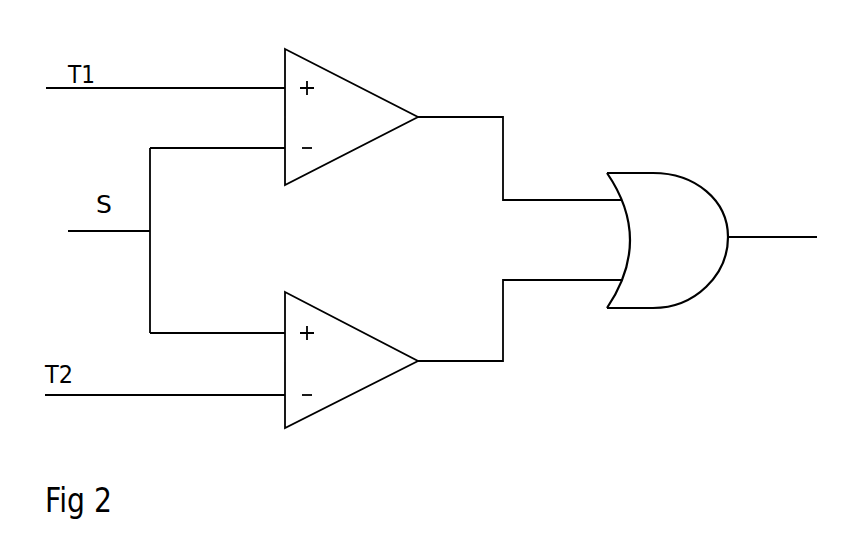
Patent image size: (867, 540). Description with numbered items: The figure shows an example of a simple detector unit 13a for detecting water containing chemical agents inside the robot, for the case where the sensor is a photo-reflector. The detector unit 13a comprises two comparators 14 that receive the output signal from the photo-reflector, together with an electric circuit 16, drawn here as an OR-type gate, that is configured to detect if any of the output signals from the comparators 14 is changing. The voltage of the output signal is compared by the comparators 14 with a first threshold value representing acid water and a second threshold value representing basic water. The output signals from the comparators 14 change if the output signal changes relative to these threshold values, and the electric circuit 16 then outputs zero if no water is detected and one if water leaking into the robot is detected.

The detector unit 13a is at (434, 84).
The comparators 14 is at (411, 222).
The electric circuit 16 is at (675, 207).